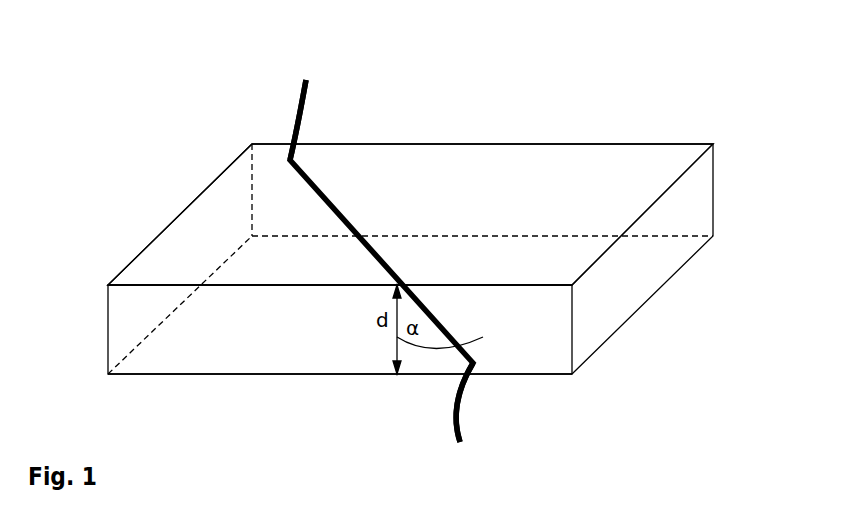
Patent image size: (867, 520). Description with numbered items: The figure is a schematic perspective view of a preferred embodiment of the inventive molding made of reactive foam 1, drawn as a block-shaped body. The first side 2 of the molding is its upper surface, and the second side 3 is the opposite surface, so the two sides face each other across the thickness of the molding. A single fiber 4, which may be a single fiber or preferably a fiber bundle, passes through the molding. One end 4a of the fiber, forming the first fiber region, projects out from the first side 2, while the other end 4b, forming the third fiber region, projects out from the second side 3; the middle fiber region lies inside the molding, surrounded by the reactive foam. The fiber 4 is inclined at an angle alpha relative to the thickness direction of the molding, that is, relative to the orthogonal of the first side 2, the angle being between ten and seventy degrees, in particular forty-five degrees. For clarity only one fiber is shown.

The molding made of reactive foam 1 is at (656, 118).
The first side of the molding 2 is at (224, 222).
The second side of the molding 3 is at (513, 375).
The fiber 4 is at (360, 220).
The one end of the fiber 4a is at (310, 103).
The other end of the fiber 4b is at (457, 443).